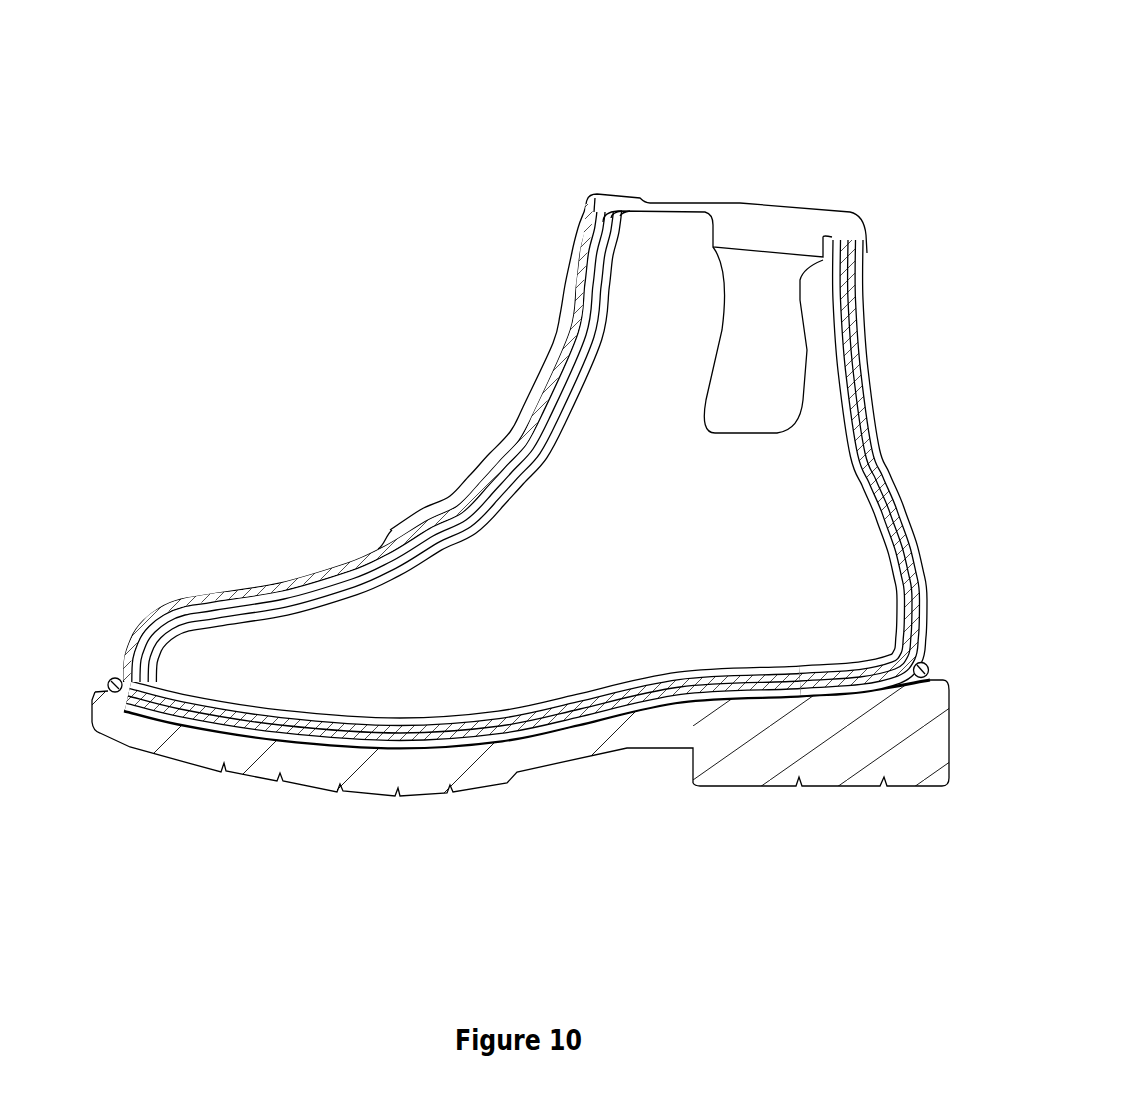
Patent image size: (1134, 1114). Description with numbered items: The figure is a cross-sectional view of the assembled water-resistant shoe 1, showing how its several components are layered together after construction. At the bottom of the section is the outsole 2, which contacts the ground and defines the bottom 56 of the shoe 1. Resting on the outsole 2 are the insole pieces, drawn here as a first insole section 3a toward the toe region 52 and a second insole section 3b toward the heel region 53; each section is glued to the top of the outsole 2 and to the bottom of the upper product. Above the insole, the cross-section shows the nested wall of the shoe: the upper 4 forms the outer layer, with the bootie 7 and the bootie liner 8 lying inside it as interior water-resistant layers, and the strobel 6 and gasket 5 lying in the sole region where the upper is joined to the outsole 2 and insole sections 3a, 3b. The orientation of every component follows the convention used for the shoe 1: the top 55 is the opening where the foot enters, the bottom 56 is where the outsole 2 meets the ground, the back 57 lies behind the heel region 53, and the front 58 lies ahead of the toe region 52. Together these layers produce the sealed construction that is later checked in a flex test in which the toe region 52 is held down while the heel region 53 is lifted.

The water-resistant shoe 1 is at (312, 290).
The outsole 2 is at (118, 738).
The first insole section 3a is at (197, 738).
The second insole section 3b is at (726, 718).
The upper 4 is at (270, 580).
The gasket 5 is at (626, 715).
The strobel 6 is at (424, 740).
The bootie 7 is at (205, 596).
The bootie liner 8 is at (154, 620).
The toe region 52 is at (245, 810).
The heel region 53 is at (833, 810).
The top of shoe 55 is at (478, 120).
The bottom of shoe 56 is at (484, 880).
The back of shoe 57 is at (912, 387).
The front of shoe 58 is at (200, 385).